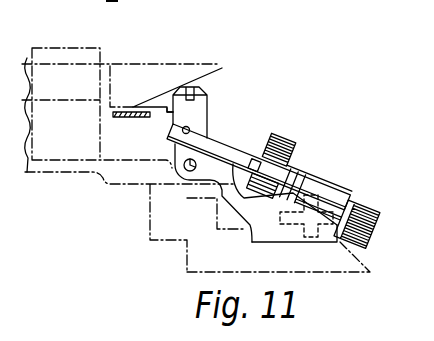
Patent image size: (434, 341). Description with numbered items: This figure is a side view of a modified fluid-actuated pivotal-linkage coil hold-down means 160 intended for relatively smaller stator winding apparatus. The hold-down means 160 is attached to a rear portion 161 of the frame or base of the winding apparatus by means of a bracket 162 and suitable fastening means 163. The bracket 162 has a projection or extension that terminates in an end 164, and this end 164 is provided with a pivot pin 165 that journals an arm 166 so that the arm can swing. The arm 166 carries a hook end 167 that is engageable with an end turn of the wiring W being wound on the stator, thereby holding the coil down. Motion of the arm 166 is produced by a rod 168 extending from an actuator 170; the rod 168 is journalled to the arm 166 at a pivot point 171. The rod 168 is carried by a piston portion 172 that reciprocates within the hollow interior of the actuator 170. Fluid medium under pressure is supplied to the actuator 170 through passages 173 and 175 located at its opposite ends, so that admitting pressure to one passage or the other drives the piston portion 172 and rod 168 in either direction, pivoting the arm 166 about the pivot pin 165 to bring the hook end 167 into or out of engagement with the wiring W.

The coil hold-down means 160 is at (285, 160).
The rear portion of frame 161 is at (343, 258).
The bracket 162 is at (240, 208).
The fastening means 163 is at (323, 190).
The end 164 is at (192, 180).
The pivot pin 165 is at (184, 168).
The arm 166 is at (182, 108).
The hook end 167 is at (152, 101).
The rod 168 is at (225, 152).
The actuator 170 is at (313, 193).
The pivot point 171 is at (189, 128).
The piston portion 172 is at (265, 222).
The passage 173 is at (283, 136).
The passage 175 is at (366, 206).
The wiring W is at (127, 118).